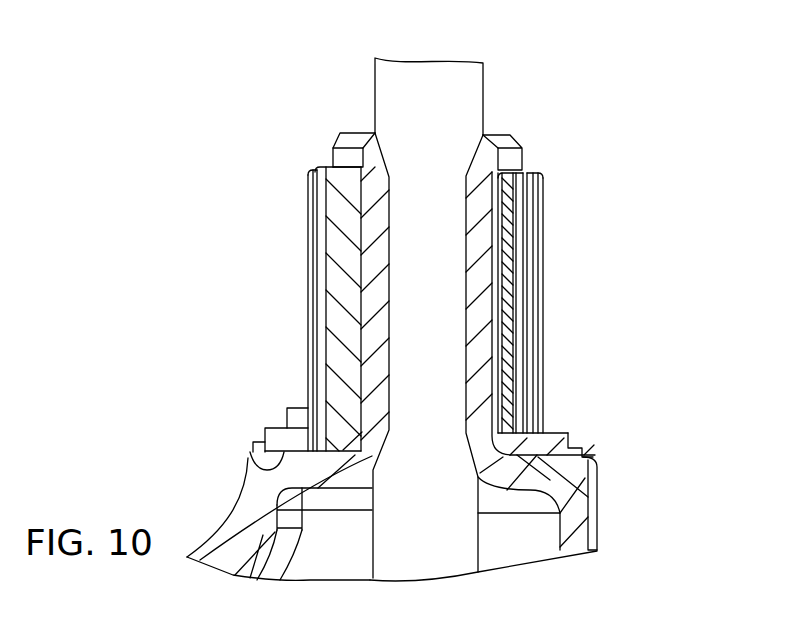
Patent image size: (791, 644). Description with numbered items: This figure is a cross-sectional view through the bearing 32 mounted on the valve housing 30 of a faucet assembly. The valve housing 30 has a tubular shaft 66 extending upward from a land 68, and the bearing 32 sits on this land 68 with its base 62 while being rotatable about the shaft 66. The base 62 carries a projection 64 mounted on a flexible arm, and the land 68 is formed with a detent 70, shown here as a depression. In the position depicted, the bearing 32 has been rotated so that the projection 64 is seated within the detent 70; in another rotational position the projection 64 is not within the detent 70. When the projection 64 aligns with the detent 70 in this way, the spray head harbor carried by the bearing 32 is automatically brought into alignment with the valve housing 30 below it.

The valve housing 30 is at (577, 545).
The bearing 32 is at (540, 268).
The base 62 is at (558, 441).
The projection 64 is at (290, 450).
The shaft 66 is at (372, 162).
The land 68 is at (496, 450).
The detent 70 is at (250, 463).